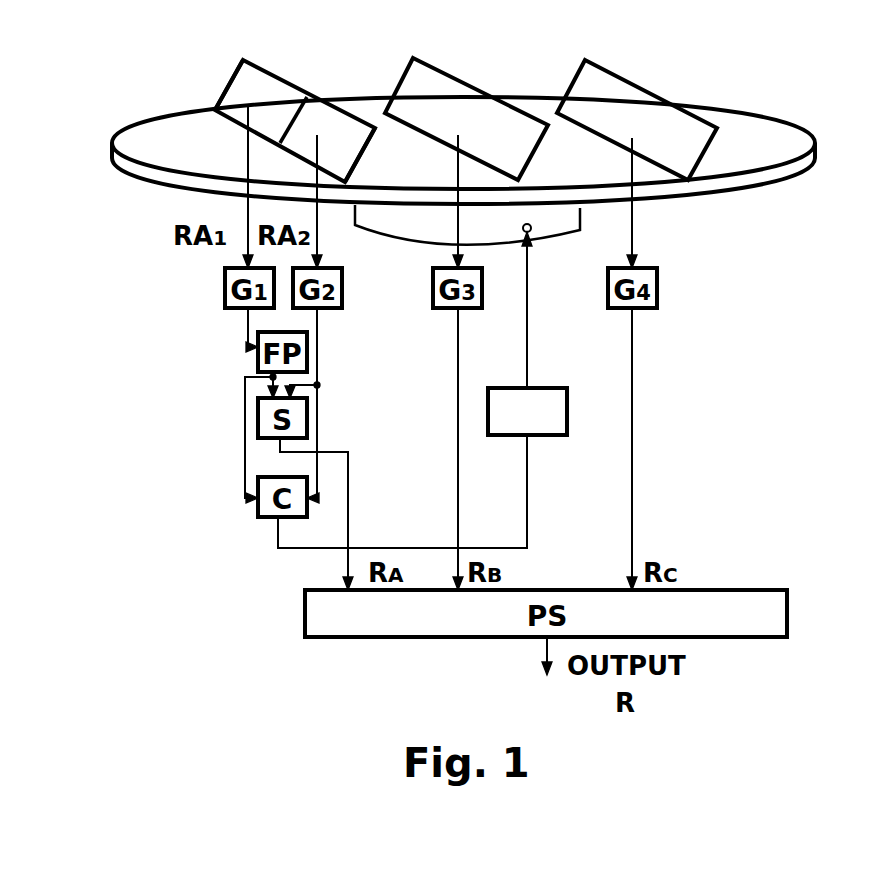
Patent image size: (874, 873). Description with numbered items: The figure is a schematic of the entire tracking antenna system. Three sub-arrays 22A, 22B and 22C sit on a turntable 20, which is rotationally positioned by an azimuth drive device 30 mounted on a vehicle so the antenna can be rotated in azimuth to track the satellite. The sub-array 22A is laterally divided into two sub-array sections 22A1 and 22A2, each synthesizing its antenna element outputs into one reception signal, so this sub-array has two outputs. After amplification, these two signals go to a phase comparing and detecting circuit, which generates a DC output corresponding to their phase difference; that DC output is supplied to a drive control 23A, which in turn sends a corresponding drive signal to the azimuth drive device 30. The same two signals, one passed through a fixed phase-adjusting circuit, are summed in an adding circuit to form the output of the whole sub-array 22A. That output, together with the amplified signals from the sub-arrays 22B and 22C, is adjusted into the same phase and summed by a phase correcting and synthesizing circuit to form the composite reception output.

The turntable 20 is at (780, 130).
The laterally divided sub-array 22A is at (272, 67).
The sub-array section 22A1 is at (235, 88).
The sub-array section 22A2 is at (397, 157).
The sub-array 22B is at (460, 87).
The sub-array 22C is at (627, 88).
The azimuth drive device 30 is at (567, 215).
The drive control 23A is at (537, 437).